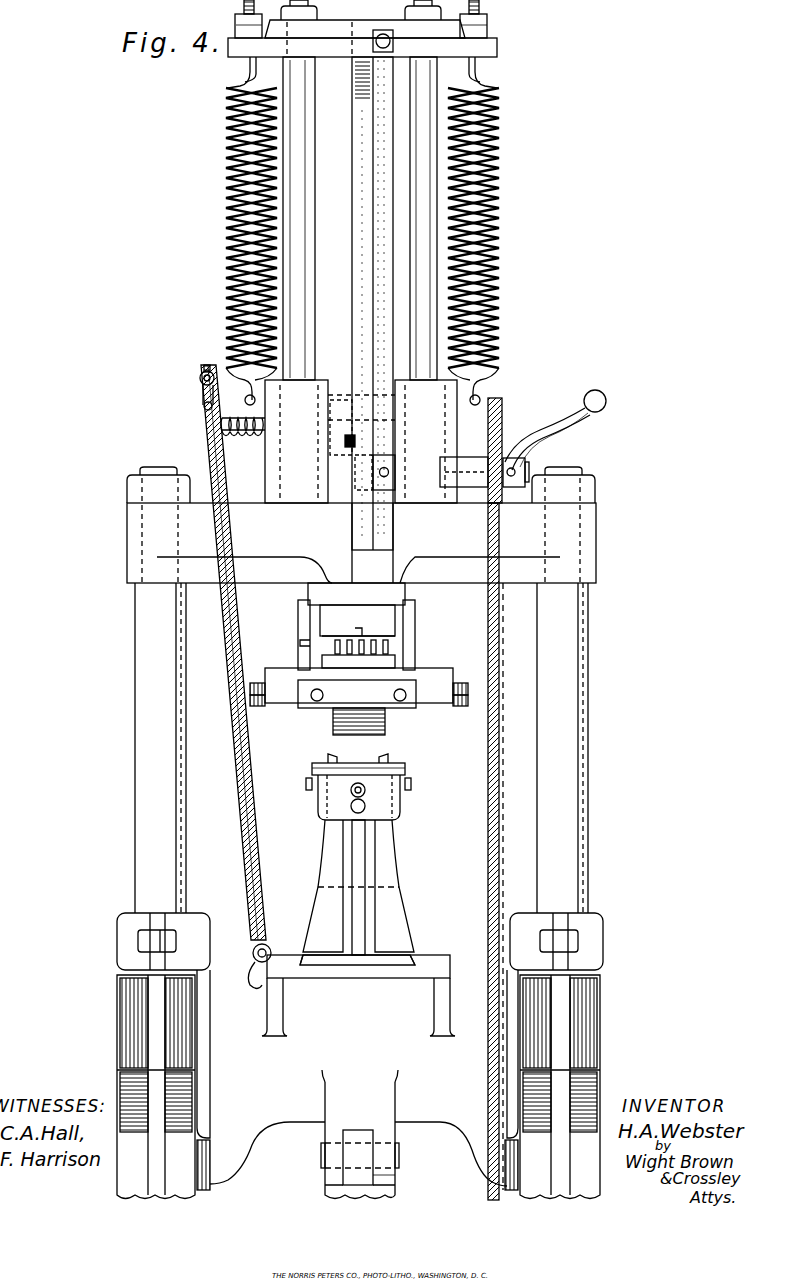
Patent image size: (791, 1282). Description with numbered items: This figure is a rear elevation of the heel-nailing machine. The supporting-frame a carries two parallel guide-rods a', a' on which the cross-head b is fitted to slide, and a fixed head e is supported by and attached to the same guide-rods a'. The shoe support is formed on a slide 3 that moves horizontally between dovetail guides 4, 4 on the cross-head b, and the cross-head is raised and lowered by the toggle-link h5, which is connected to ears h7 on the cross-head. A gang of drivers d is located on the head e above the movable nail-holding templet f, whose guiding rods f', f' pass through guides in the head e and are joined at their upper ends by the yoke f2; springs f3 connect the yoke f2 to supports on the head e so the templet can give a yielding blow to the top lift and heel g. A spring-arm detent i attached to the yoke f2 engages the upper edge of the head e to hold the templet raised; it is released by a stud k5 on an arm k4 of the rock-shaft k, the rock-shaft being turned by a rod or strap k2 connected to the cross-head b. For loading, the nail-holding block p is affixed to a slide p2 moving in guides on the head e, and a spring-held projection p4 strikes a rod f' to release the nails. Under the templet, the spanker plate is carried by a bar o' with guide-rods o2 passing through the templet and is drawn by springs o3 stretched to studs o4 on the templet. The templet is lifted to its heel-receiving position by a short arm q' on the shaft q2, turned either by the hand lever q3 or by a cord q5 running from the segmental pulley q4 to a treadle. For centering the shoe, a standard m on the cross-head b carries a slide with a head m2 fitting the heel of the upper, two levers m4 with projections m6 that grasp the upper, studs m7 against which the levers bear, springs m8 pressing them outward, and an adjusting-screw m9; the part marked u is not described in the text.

The bar or yoke f2 is at (432, 34).
The springs f3 is at (227, 210).
The templet-guiding rods f' is at (339, 218).
The spring-arm detent i is at (365, 160).
The short arm q' is at (466, 300).
The stud k5 is at (357, 447).
The arm k4 is at (318, 437).
The segmental pulley q4 is at (503, 416).
The shaft q2 is at (524, 466).
The handle or lever q3 is at (607, 408).
The rod or strap k2 is at (225, 627).
The rock-shaft k is at (209, 371).
The head e is at (477, 528).
The guide-rods a' is at (372, 748).
The cord or strap q5 is at (500, 775).
The slide p2 is at (398, 593).
The nail-holding block p is at (356, 635).
The arm or projection p4 is at (280, 628).
The drivers d is at (380, 648).
The nail-holding templet f is at (369, 677).
The studs o4 is at (258, 684).
The springs o3 is at (262, 706).
The bar o' is at (359, 705).
The guide-rods o2 is at (316, 700).
The heel g is at (345, 729).
The standard m is at (370, 903).
The head m2 is at (360, 783).
The springs m8 is at (366, 790).
The adjusting-screw m9 is at (366, 807).
The projections m6 is at (320, 768).
The levers m4 is at (318, 783).
The studs or supports m7 is at (318, 793).
The cross-head b is at (358, 995).
The slide 3 is at (398, 952).
The dovetail guides 4 is at (308, 955).
The left roller u is at (140, 1090).
The supporting-frame a is at (579, 1056).
The ears h7 is at (376, 1124).
The toggle-link h5 is at (376, 1190).